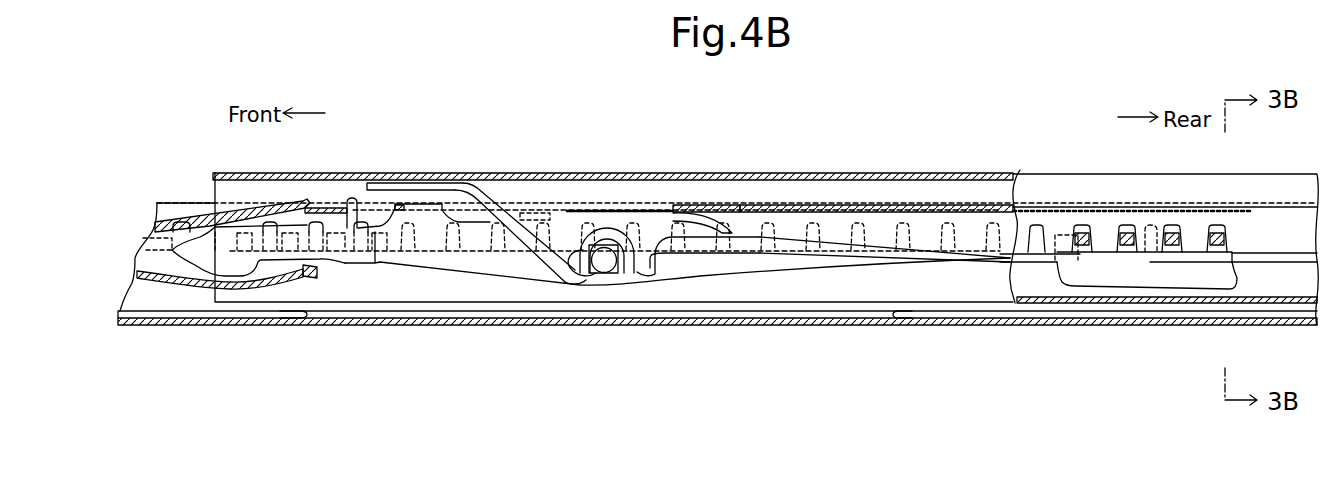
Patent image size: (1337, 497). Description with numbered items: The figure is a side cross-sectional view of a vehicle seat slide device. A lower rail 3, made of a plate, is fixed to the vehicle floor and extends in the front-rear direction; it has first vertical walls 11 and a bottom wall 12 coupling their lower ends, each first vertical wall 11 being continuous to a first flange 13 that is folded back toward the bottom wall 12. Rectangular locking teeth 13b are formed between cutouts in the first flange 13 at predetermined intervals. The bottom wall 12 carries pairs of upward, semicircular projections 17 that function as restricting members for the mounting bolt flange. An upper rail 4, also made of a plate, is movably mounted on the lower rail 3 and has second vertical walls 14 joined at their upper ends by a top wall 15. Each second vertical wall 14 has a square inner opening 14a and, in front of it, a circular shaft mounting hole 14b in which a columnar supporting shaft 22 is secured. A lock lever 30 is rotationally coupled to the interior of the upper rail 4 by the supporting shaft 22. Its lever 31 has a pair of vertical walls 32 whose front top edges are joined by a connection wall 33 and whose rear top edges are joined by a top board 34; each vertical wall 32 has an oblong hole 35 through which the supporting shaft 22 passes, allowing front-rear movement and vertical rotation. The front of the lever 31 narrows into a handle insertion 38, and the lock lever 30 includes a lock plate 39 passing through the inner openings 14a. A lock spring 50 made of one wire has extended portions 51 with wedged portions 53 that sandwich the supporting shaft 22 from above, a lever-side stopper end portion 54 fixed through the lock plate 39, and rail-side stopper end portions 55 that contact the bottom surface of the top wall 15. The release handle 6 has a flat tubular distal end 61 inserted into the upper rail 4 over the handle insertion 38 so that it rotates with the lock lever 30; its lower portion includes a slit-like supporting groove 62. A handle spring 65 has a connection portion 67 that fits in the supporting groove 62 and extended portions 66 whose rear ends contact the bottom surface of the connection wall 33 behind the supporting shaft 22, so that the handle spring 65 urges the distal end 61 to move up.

The lower rail 3 is at (1285, 330).
The upper rail 4 is at (1270, 177).
The release handle 6 is at (168, 200).
The first vertical wall 11 is at (159, 302).
The bottom wall 12 is at (960, 326).
The first flange 13 is at (198, 203).
The locking tooth 13b is at (1052, 262).
The second vertical wall 14 is at (225, 291).
The inner opening 14a is at (1180, 284).
The shaft mounting hole 14b is at (596, 274).
The top wall 15 is at (738, 173).
The projection 17 is at (313, 318).
The supporting shaft 22 is at (605, 273).
The lock lever 30 is at (1092, 140).
The lever 31 is at (1020, 170).
The vertical wall 32 is at (456, 264).
The connection wall 33 is at (438, 204).
The top board 34 is at (870, 204).
The oblong hole 35 is at (645, 280).
The handle insertion 38 is at (336, 198).
The lock plate 39 is at (1083, 253).
The lock spring 50 is at (793, 237).
The extended portion 51 is at (492, 192).
The wedged portion 53 is at (578, 226).
The lever-side stopper end portion 54 is at (1147, 253).
The rail-side stopper end portion 55 is at (398, 183).
The distal end 61 is at (157, 218).
The supporting groove 62 is at (300, 312).
The handle spring 65 is at (618, 210).
The extended portion 66 is at (660, 212).
The connection portion 67 is at (318, 280).